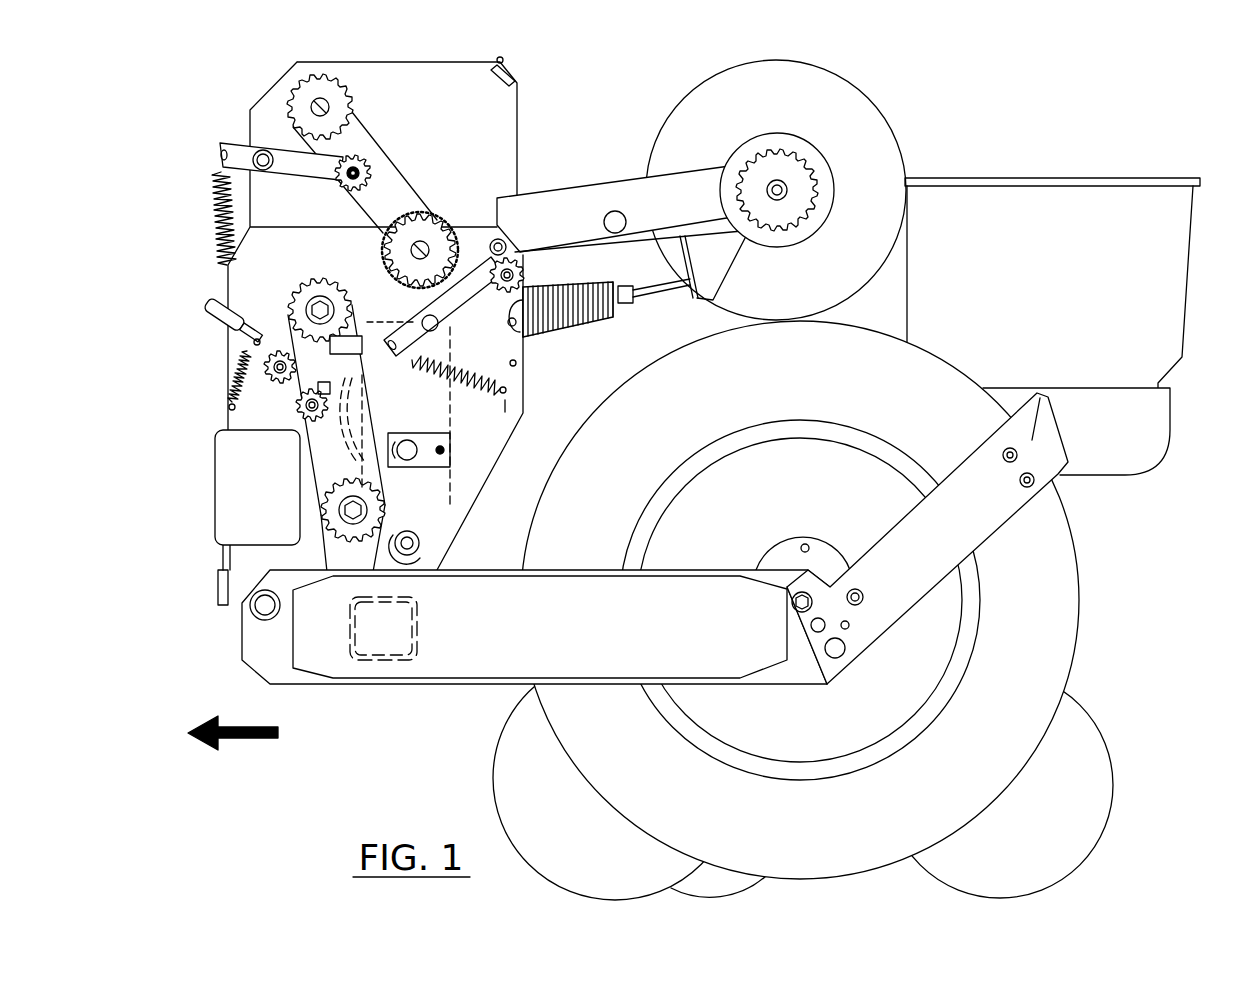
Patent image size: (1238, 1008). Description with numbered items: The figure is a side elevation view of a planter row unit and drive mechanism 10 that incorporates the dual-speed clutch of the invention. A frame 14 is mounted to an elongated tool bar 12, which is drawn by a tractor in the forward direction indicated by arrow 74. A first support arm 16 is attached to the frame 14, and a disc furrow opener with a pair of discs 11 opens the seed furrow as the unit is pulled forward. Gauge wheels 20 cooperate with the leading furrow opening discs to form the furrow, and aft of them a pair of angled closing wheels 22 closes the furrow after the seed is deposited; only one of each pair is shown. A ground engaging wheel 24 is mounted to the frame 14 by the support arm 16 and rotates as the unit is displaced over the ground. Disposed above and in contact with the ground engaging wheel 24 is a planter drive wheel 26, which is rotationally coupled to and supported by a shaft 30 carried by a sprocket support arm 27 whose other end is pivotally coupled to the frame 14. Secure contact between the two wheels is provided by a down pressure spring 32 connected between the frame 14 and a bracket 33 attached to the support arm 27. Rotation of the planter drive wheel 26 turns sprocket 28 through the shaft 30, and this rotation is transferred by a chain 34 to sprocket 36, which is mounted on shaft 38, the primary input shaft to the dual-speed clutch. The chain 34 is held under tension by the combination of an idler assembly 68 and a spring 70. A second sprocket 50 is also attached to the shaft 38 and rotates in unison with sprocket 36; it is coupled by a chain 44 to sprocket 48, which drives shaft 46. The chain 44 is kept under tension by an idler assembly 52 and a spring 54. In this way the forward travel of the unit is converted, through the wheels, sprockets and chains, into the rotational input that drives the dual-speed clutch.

The planter row unit and drive mechanism 10 is at (984, 112).
The discs 11 is at (465, 767).
The tool bar 12 is at (240, 484).
The frame 14 is at (243, 292).
The first support arm 16 is at (523, 637).
The gauge wheels 20 is at (710, 890).
The closing wheels 22 is at (1083, 753).
The ground engaging wheel 24 is at (1068, 556).
The planter drive wheel 26 is at (813, 77).
The sprocket support arm 27 is at (549, 230).
The sprocket 28 is at (793, 176).
The shaft 30 is at (776, 184).
The down pressure spring 32 is at (560, 330).
The bracket 33 is at (710, 272).
The chain 34 is at (607, 182).
The sprocket 36 is at (440, 222).
The shaft 38 is at (410, 242).
The chain 44 is at (366, 124).
The shaft 46 is at (315, 100).
The sprocket 48 is at (320, 80).
The second sprocket 50 is at (398, 250).
The idler assembly 52 is at (237, 147).
The spring 54 is at (215, 212).
The idler assembly 68 is at (462, 312).
The spring 70 is at (463, 387).
The arrow 74 is at (242, 737).